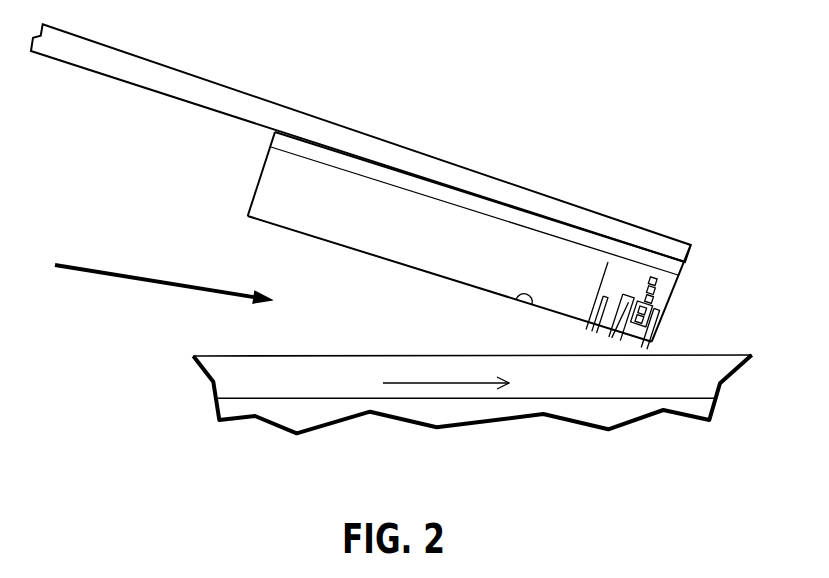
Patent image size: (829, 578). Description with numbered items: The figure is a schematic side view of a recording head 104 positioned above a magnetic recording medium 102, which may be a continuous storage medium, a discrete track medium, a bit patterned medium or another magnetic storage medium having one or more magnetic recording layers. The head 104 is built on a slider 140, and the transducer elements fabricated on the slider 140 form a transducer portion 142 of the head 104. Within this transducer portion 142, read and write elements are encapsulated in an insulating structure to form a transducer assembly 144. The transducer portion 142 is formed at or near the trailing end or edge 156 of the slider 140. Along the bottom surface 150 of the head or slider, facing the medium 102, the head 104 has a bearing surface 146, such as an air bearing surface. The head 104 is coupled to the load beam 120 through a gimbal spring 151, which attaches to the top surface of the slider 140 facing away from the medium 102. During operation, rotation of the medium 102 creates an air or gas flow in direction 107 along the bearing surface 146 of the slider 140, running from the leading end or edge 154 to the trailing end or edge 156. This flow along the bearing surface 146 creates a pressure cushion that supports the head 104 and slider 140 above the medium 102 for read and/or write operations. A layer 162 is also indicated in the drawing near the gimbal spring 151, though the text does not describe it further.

The medium 102 is at (686, 385).
The head 104 is at (412, 186).
The direction of air or gas flow 107 is at (452, 383).
The load beam 120 is at (295, 122).
The slider 140 is at (497, 222).
The transducer portion 142 is at (677, 281).
The transducer assembly 144 is at (668, 273).
The bearing surface 146 is at (416, 268).
The bottom surface 150 is at (536, 302).
The gimbal spring 151 is at (413, 181).
The leading end or edge 154 is at (481, 237).
The trailing end or edge 156 is at (690, 264).
The layer 162 is at (474, 185).